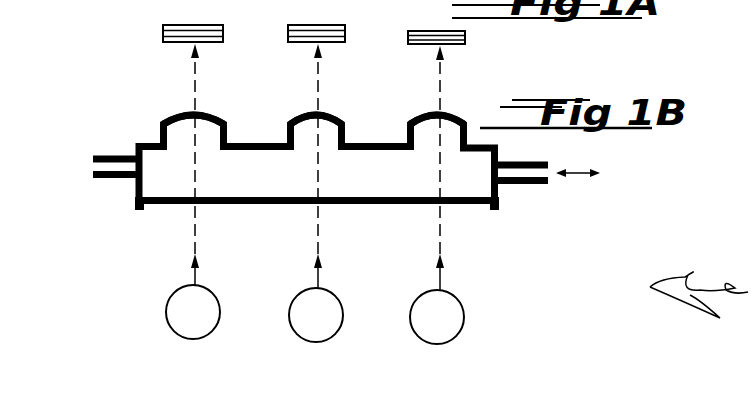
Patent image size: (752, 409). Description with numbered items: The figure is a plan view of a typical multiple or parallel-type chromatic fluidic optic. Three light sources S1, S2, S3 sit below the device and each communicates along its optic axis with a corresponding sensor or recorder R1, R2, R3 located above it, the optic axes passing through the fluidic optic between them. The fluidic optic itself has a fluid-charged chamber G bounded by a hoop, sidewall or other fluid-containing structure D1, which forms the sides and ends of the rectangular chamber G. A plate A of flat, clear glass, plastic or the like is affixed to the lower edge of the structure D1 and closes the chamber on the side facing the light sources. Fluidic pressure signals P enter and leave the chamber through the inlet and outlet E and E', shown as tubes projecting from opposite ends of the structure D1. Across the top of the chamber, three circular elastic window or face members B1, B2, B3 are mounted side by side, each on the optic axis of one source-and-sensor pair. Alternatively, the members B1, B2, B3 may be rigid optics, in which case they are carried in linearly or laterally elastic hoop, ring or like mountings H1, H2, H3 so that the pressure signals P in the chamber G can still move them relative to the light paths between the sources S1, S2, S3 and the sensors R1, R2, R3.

The plate A is at (177, 203).
The fluid-charged chamber G is at (382, 175).
The fluid-containing structure D1 is at (127, 203).
The outlet E' is at (104, 144).
The inlet E is at (522, 197).
The fluidic pressure signals P is at (578, 163).
The elastic window or face member B1 is at (181, 117).
The elastic window or face member B2 is at (304, 117).
The elastic window or face member B3 is at (425, 117).
The elastic hoop mounting H1 is at (160, 128).
The elastic hoop mounting H2 is at (286, 128).
The elastic hoop mounting H3 is at (406, 131).
The sensor or recorder R1 is at (193, 23).
The sensor or recorder R2 is at (316, 23).
The sensor or recorder R3 is at (436, 25).
The light source S1 is at (193, 191).
The light source S2 is at (316, 193).
The light source S3 is at (437, 195).